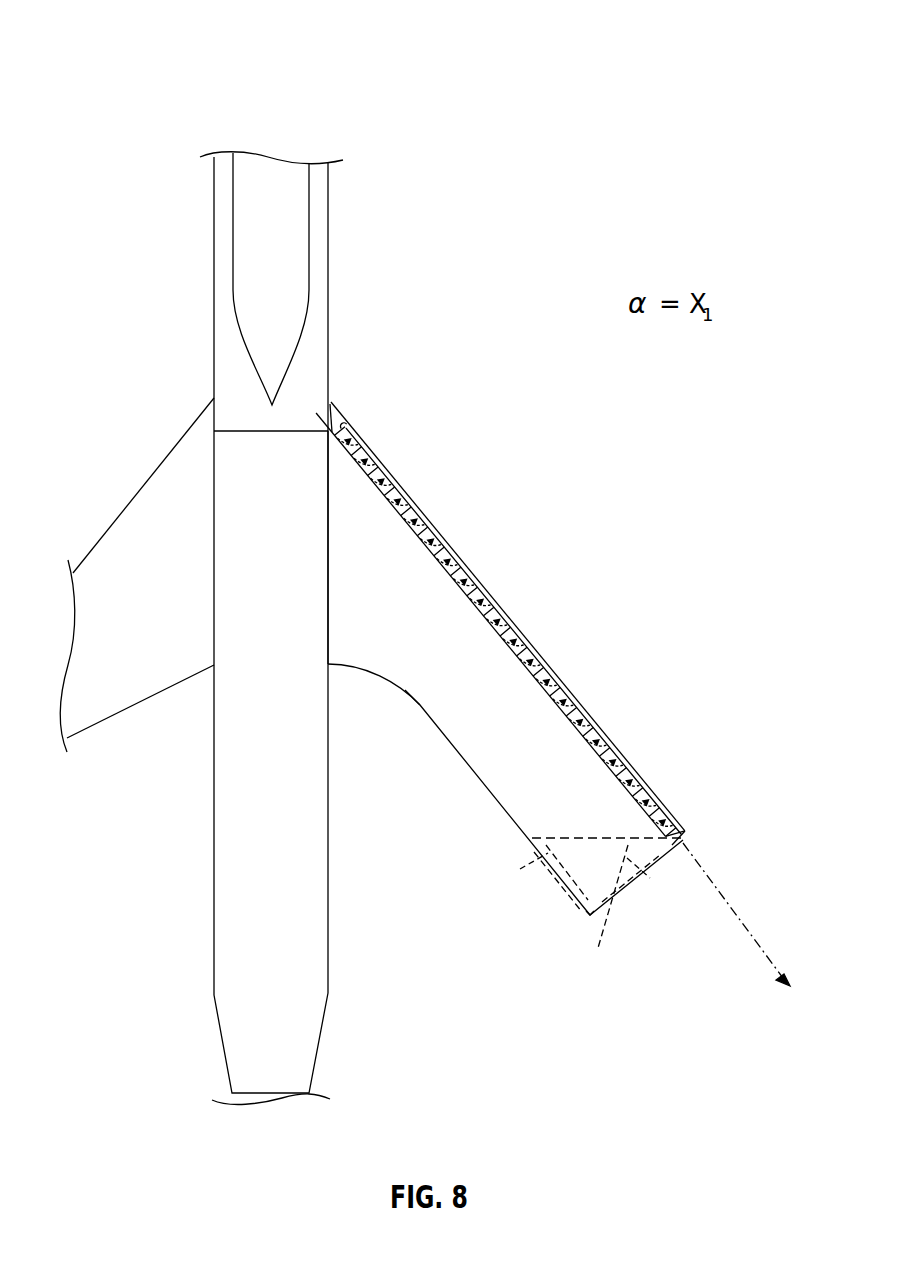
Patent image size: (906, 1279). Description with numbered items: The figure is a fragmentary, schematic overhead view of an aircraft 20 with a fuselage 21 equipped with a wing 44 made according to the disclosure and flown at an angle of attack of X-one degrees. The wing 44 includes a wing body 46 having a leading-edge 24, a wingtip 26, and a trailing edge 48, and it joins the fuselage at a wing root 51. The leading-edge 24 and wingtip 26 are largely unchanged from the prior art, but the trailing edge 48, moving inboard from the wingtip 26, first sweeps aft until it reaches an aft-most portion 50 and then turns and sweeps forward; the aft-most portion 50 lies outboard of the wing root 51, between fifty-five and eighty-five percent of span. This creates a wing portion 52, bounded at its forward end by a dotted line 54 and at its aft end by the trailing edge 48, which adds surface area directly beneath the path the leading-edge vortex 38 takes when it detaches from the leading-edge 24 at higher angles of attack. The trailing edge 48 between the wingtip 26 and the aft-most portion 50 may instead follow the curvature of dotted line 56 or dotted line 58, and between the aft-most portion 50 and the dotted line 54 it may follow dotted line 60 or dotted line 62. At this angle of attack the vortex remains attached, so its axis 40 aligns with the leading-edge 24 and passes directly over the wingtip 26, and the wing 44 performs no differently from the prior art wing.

The aircraft 20 is at (101, 46).
The fuselage 21 is at (214, 268).
The leading-edge 24 is at (332, 401).
The wingtip 26 is at (688, 838).
The leading-edge vortex 38 is at (495, 592).
The axis 40 is at (752, 940).
The wing 44 is at (428, 676).
The wing body 46 is at (395, 652).
The trailing edge 48 is at (472, 768).
The aft-most portion 50 is at (590, 917).
The wing root 51 is at (330, 592).
The wing portion 52 is at (556, 848).
The dotted line 54 is at (600, 836).
The dotted line 56 is at (598, 948).
The dotted line 58 is at (650, 878).
The dotted line 60 is at (520, 869).
The dotted line 62 is at (558, 894).